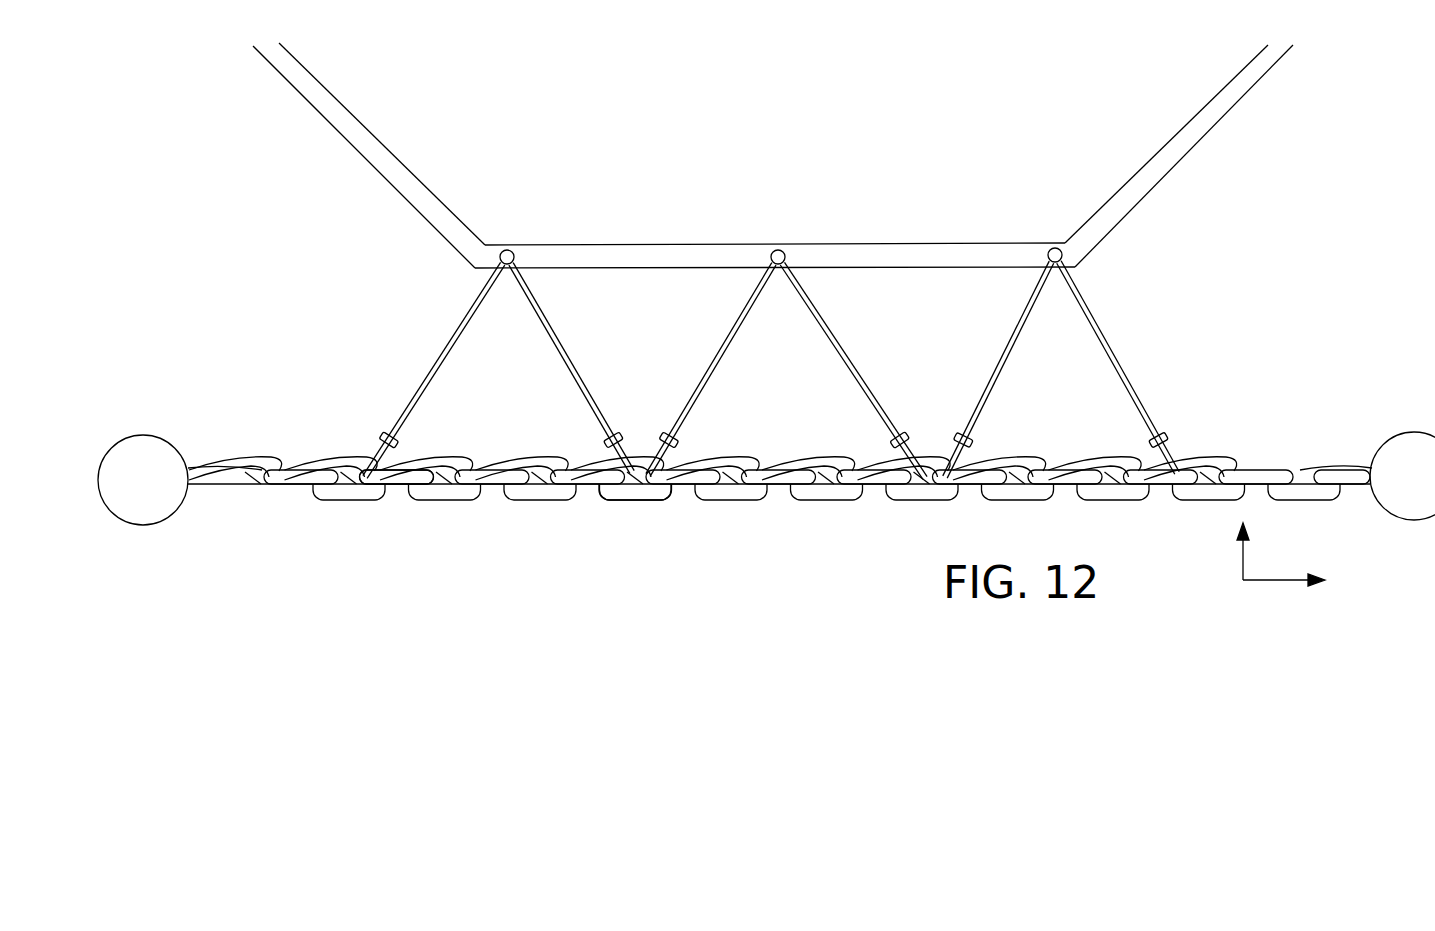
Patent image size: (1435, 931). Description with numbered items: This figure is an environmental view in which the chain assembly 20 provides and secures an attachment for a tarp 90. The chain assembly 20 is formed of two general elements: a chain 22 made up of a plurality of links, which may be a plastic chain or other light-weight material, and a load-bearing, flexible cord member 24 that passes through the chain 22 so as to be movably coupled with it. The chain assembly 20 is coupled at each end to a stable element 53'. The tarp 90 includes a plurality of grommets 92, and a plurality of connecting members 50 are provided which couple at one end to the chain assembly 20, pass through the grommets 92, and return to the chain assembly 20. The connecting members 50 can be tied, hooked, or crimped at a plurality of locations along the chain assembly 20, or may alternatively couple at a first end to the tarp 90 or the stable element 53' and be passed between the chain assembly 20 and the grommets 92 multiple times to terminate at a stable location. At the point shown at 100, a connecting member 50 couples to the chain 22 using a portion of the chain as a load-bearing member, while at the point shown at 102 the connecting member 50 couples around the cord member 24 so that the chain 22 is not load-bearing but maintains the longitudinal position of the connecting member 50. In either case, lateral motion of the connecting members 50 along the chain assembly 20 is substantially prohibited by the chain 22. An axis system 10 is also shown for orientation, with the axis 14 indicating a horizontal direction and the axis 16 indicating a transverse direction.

The tarp 90 is at (845, 151).
The grommets 92 is at (511, 251).
The connecting members 50 is at (566, 326).
The coupling point using chain as load-bearing member 100 is at (630, 448).
The coupling point around the cord member 102 is at (670, 458).
The chain assembly 20 is at (565, 500).
The chain 22 is at (665, 499).
The flexible cord member 24 is at (415, 466).
The stable element 53' is at (766, 452).
The axis system 10 is at (1270, 562).
The transverse axis 16 is at (1243, 514).
The horizontal axis 14 is at (1339, 581).